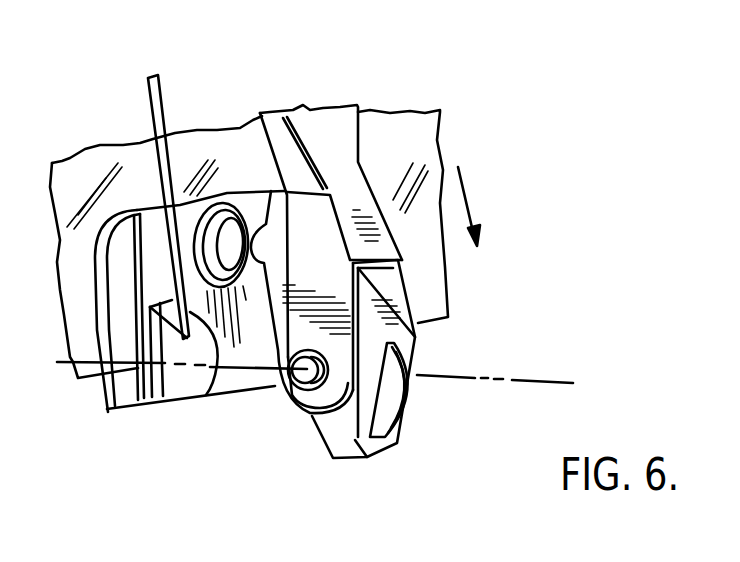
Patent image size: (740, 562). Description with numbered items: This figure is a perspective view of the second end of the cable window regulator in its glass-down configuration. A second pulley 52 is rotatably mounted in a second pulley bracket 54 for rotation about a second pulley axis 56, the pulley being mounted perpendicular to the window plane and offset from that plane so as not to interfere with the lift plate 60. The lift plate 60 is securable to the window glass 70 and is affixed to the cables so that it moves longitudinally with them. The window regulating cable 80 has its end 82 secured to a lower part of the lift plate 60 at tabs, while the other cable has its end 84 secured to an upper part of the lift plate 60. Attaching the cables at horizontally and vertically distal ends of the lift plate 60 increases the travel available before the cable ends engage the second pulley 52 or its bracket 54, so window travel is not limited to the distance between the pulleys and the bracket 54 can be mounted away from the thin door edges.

The second pulley 52 is at (277, 425).
The second pulley bracket 54 is at (332, 123).
The second pulley axis 56 is at (533, 379).
The lift plate 60 is at (125, 398).
The window glass 70 is at (407, 155).
The cable 80 is at (163, 102).
The cable end 82 is at (198, 395).
The cable end 84 is at (241, 212).